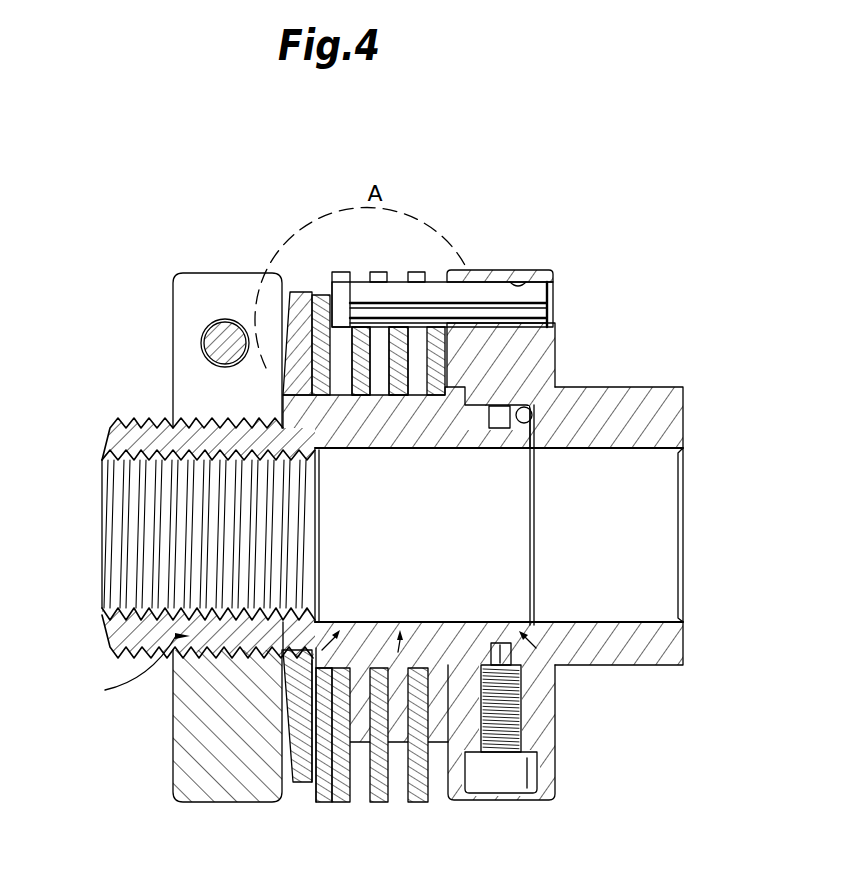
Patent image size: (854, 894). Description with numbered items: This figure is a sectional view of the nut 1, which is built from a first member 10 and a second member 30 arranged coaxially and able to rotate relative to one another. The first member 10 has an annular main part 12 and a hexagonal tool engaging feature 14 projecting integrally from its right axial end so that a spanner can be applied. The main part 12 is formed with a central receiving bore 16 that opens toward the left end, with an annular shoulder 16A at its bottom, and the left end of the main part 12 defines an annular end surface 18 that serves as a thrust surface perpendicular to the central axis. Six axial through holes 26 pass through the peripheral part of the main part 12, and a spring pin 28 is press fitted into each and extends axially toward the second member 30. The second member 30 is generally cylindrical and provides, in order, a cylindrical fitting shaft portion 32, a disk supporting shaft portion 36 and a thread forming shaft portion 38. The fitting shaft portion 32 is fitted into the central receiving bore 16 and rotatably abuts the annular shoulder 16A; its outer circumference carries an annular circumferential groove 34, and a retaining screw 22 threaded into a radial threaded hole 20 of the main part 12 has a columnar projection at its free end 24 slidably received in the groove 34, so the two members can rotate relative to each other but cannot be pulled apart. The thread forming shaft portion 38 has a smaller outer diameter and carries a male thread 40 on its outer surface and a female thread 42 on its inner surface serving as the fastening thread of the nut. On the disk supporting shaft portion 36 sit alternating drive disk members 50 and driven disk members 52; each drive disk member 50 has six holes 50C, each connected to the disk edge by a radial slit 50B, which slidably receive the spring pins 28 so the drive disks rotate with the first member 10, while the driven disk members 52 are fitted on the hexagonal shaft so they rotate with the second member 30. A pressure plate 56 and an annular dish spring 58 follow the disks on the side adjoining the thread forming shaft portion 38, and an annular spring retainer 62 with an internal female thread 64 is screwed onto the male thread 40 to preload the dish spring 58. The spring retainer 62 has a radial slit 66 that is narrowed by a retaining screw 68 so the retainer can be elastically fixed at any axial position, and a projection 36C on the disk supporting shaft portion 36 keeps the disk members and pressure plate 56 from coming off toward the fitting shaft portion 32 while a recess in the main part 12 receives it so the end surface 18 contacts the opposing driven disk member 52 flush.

The nut 1 is at (456, 217).
The first member 10 is at (567, 370).
The annular main part 12 is at (546, 340).
The tool engaging feature 14 is at (657, 400).
The central receiving bore 16 is at (531, 416).
The annular shoulder 16A is at (519, 452).
The annular end surface 18 is at (440, 745).
The threaded hole 20 is at (521, 740).
The retaining screw 22 is at (503, 782).
The free end 24 is at (545, 706).
The axial through hole 26 is at (518, 278).
The spring pin 28 is at (437, 290).
The second member 30 is at (284, 763).
The cylindrical fitting shaft portion 32 is at (558, 690).
The annular circumferential groove 34 is at (500, 428).
The disk supporting shaft portion 36 is at (385, 690).
The projection 36C is at (447, 385).
The thread forming shaft portion 38 is at (129, 671).
The male thread 40 is at (143, 418).
The female thread 42 is at (177, 613).
The drive disk member 50 is at (418, 343).
The radial slit 50B is at (335, 290).
The hole 50C is at (333, 302).
The driven disk member 52 is at (408, 372).
The pressure plate 56 is at (322, 775).
The annular dish spring 58 is at (305, 782).
The annular spring retainer 62 is at (182, 772).
The female thread 64 is at (173, 677).
The slit 66 is at (218, 283).
The retaining screw 68 is at (212, 333).